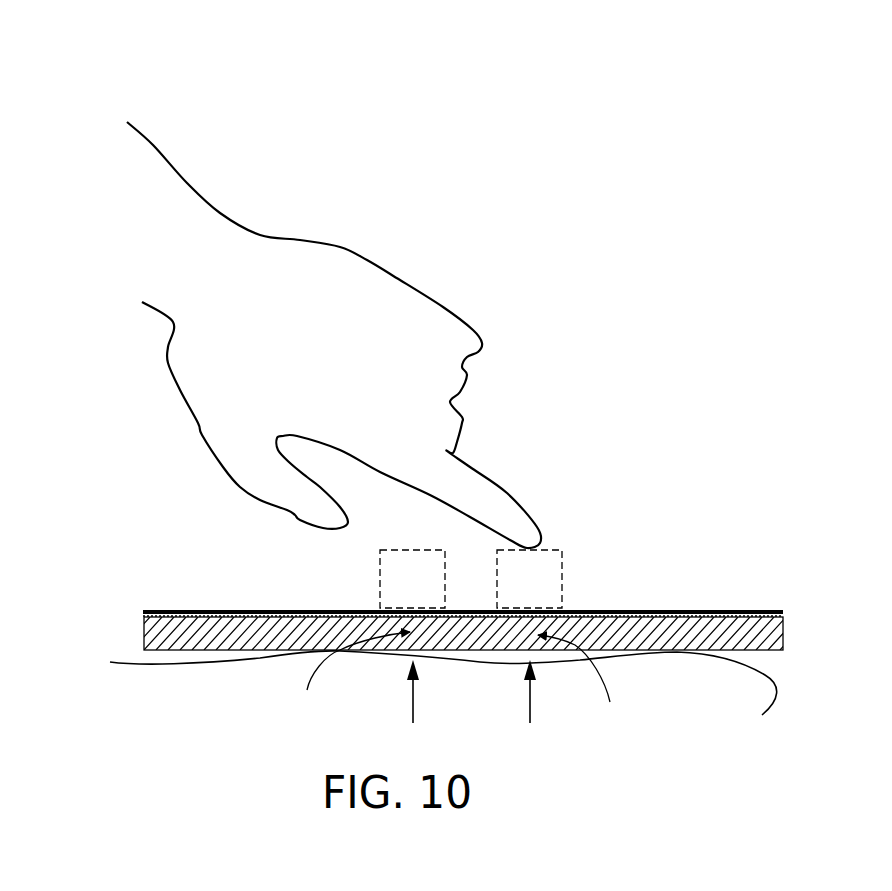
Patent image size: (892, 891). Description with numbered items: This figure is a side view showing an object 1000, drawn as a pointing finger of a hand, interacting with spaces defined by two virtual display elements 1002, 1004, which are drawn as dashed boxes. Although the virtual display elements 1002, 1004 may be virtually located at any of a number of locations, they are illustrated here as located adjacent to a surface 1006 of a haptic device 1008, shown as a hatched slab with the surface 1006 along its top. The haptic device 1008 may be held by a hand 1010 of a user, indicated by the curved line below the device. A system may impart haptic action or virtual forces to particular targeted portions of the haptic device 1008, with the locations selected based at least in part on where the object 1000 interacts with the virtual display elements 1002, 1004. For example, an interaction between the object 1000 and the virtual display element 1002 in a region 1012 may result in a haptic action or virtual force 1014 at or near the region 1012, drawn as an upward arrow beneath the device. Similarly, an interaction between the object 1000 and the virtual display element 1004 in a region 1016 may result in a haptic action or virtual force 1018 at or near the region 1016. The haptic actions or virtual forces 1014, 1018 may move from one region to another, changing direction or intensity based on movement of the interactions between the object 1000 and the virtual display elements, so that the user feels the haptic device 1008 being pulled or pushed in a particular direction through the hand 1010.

The object 1000 is at (505, 510).
The virtual display element 1002 is at (553, 588).
The virtual display element 1004 is at (437, 588).
The surface 1006 is at (641, 608).
The haptic device 1008 is at (143, 632).
The hand 1010 is at (714, 703).
The region 1012 is at (585, 682).
The haptic action or virtual force 1014 is at (533, 705).
The region 1016 is at (346, 675).
The haptic action or virtual force 1018 is at (410, 705).